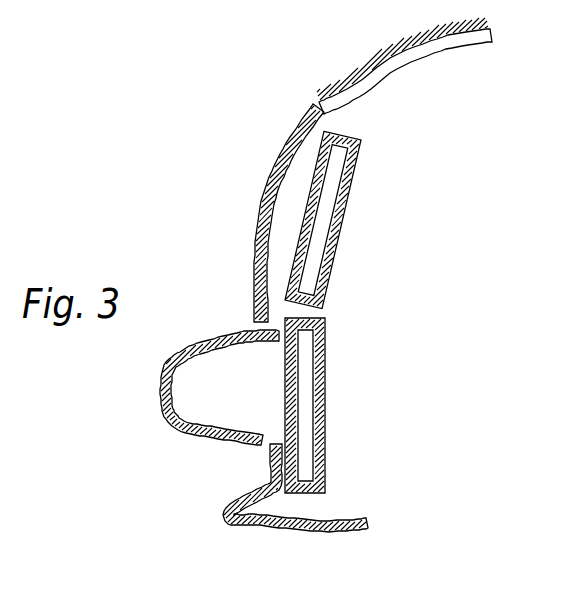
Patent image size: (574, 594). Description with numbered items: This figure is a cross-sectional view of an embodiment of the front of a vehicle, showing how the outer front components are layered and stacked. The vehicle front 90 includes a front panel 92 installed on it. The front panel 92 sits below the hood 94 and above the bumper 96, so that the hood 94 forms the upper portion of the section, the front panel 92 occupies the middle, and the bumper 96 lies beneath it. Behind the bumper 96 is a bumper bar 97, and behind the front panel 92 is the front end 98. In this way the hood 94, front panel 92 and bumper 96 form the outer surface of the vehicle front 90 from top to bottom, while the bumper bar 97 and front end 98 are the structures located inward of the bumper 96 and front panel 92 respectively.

The vehicle front 90 is at (186, 99).
The front panel 92 is at (253, 189).
The hood 94 is at (341, 69).
The bumper 96 is at (160, 422).
The bumper bar 97 is at (327, 420).
The front end 98 is at (345, 240).